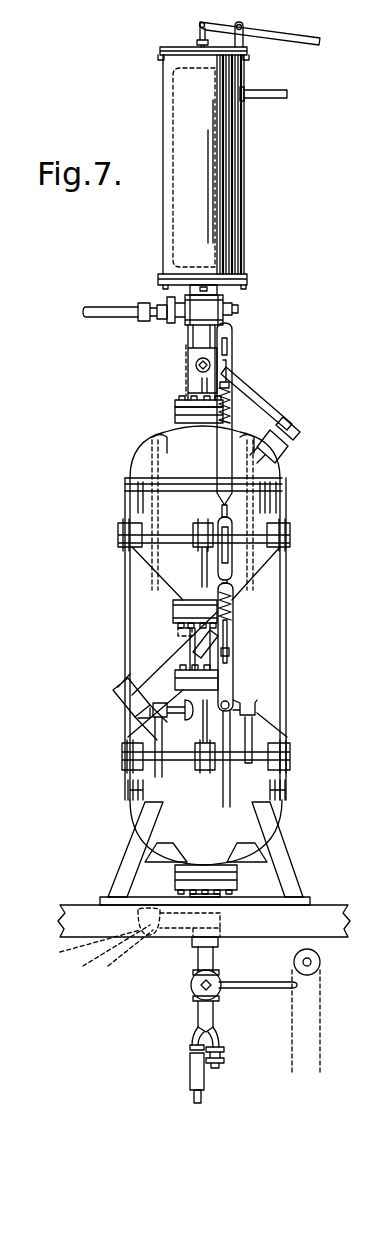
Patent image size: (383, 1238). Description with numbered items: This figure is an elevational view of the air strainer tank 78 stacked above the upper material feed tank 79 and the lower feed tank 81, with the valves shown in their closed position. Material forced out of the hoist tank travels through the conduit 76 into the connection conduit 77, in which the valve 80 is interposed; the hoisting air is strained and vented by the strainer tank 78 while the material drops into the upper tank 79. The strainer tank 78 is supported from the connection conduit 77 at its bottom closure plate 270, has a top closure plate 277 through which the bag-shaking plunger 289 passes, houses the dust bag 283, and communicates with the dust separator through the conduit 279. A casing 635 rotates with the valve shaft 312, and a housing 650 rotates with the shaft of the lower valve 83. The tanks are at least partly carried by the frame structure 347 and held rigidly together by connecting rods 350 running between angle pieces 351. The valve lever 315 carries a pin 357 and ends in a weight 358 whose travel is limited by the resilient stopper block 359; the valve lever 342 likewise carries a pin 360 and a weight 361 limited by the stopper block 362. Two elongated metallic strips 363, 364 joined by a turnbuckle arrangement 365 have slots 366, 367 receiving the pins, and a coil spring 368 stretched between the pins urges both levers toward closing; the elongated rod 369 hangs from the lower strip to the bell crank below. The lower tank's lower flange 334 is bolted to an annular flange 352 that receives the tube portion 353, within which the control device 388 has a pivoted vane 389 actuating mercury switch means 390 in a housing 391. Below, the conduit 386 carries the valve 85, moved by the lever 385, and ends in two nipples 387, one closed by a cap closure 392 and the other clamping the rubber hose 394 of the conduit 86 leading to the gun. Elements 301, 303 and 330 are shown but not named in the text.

The conduit 76 is at (102, 300).
The connection conduit 77 is at (245, 316).
The air strainer tank 78 is at (247, 191).
The upper material feed tank 79 is at (135, 468).
The valve 80 is at (172, 371).
The lower feed tank 81 is at (124, 794).
The valve 83 is at (175, 642).
The valve 85 is at (180, 999).
The conduit 86 is at (209, 1081).
The bottom closure plate 270 is at (160, 278).
The top closure plate 277 is at (160, 50).
The conduit 279 is at (270, 92).
The dust bag 283 is at (232, 134).
The plunger 289 is at (207, 43).
The lower flange 301 is at (175, 421).
The upper flange 303 is at (175, 405).
The valve shaft 312 is at (200, 368).
The valve lever 315 is at (260, 391).
The angled fitting 330 is at (197, 645).
The lower flange 334 is at (175, 871).
The valve lever 342 is at (138, 682).
The frame structure 347 is at (123, 844).
The connecting rods 350 is at (126, 585).
The angle pieces 351 is at (123, 538).
The annular flange 352 is at (232, 880).
The tube portion 353 is at (218, 940).
The pin 357 is at (229, 388).
The weight 358 is at (292, 420).
The resilient stopper block 359 is at (284, 448).
The pin 360 is at (228, 622).
The weight 361 is at (115, 690).
The resilient stopper block 362 is at (124, 712).
The elongated metallic strip 363 is at (223, 460).
The elongated metallic strip 364 is at (233, 668).
The turnbuckle arrangement 365 is at (232, 527).
The elongated slot 366 is at (228, 348).
The elongated slot 367 is at (229, 653).
The coil spring 368 is at (230, 423).
The elongated rod 369 is at (223, 785).
The lever 385 is at (260, 988).
The conduit 386 is at (207, 955).
The nipples 387 is at (193, 1038).
The control device 388 is at (123, 954).
The pivoted vane 389 is at (220, 927).
The mercury switch means 390 is at (108, 949).
The housing 391 is at (332, 1017).
The cap closure 392 is at (320, 960).
The rubber hose 394 is at (194, 1096).
The casing 635 is at (188, 360).
The housing 650 is at (178, 632).